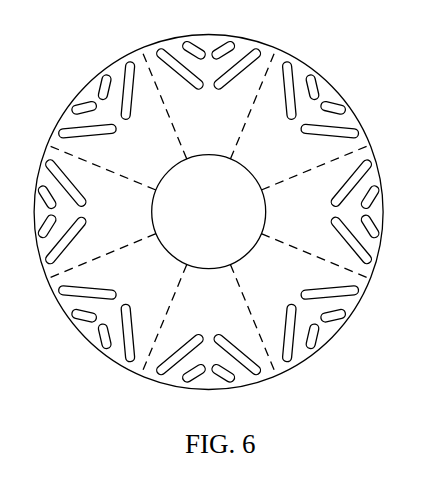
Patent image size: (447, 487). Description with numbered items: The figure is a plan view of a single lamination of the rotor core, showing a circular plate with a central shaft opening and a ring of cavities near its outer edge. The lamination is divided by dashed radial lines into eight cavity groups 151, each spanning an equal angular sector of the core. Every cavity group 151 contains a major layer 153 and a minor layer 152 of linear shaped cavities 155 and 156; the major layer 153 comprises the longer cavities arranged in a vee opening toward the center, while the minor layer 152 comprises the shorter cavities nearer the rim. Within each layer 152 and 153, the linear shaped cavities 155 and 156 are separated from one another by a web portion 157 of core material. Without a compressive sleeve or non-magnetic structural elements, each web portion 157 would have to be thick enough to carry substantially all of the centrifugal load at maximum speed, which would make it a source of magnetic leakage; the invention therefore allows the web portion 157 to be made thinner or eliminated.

The cavity group 151 is at (228, 199).
The minor layer 152 is at (347, 112).
The major layer 153 is at (332, 167).
The linear shaped cavity 155 is at (300, 169).
The linear shaped cavity 156 is at (290, 100).
The web portion 157 is at (288, 128).